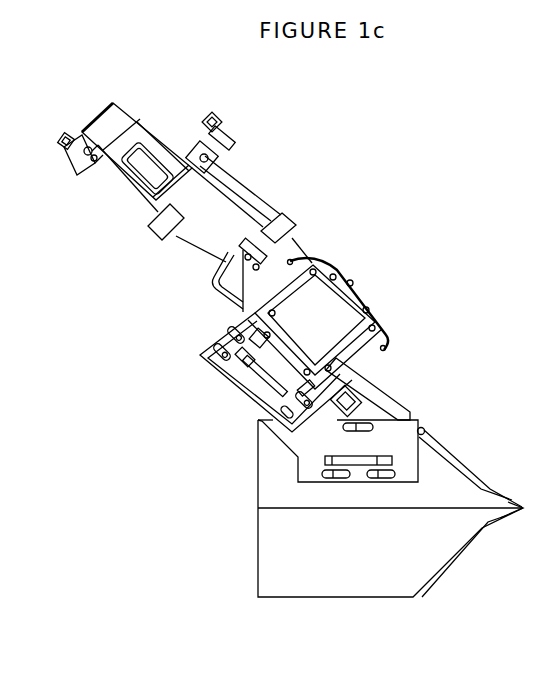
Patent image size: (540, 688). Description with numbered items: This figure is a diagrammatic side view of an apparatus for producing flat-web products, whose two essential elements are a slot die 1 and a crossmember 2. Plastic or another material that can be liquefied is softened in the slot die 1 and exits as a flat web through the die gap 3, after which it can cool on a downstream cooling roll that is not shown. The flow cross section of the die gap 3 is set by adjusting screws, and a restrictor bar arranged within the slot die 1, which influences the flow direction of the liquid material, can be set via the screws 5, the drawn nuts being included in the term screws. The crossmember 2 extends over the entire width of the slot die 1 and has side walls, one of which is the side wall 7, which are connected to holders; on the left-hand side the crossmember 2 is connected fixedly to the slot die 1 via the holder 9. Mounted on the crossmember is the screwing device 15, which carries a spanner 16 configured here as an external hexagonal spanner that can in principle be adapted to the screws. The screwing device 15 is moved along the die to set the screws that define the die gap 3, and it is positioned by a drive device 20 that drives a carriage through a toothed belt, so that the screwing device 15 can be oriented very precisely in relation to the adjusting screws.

The slot die 1 is at (382, 600).
The crossmember 2 is at (365, 293).
The die gap 3 is at (517, 568).
The screws 5 is at (348, 402).
The side wall 7 is at (227, 340).
The holder 9 is at (245, 397).
The screwing device 15 is at (142, 157).
The spanner 16 is at (393, 402).
The drive device 20 is at (243, 193).